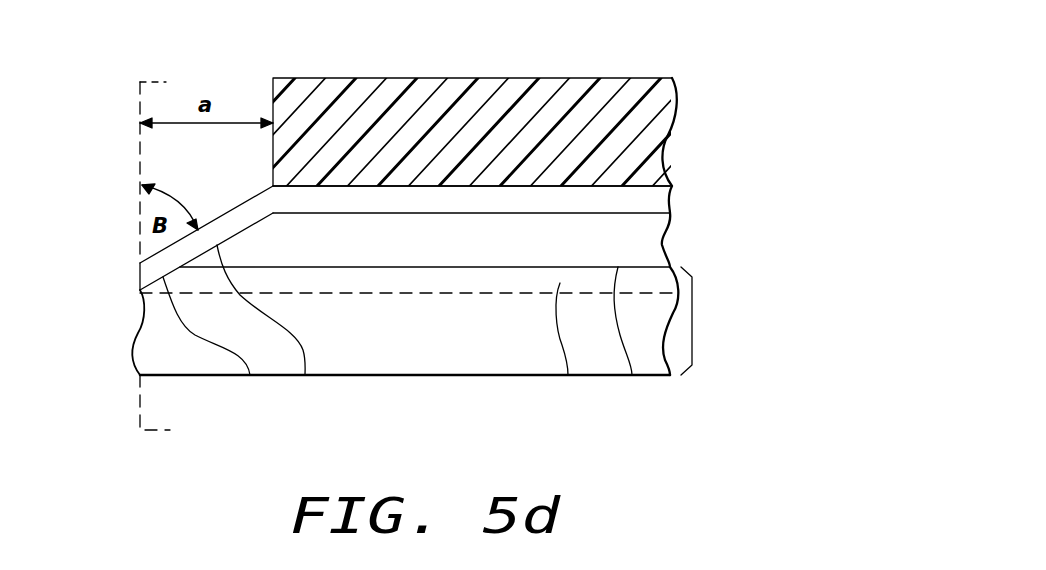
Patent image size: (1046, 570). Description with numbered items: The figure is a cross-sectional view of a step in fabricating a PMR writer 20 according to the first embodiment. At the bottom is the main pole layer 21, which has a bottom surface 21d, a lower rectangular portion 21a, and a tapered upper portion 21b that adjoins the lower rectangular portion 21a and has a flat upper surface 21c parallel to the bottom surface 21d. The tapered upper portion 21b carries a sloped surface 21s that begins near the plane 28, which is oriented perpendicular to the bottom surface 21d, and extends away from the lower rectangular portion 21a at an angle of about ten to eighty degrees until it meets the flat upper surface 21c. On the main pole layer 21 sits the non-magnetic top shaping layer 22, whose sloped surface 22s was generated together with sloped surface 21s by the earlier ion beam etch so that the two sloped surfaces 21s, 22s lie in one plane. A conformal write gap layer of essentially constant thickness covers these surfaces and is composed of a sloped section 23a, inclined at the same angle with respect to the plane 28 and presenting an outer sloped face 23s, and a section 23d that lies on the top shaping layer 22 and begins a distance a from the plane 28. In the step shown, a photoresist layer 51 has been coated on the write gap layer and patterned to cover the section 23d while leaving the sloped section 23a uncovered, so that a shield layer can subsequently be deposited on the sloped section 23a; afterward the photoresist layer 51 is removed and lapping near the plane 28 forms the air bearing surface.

The PMR writer 20 is at (681, 65).
The photoresist layer 51 is at (466, 100).
The section of write gap layer 23d is at (653, 195).
The sloped surface of layer 23 23s is at (230, 211).
The sloped section of write gap layer 23a is at (157, 266).
The non-magnetic top shaping layer 22 is at (650, 240).
The main pole layer 21 is at (429, 321).
The sloped surface 21s is at (248, 375).
The sloped surface 22s is at (303, 375).
The bottom surface 21d is at (410, 375).
The lower rectangular portion 21a is at (490, 363).
The tapered upper portion 21b is at (568, 375).
The flat upper surface 21c is at (632, 375).
The plane 28 is at (175, 257).